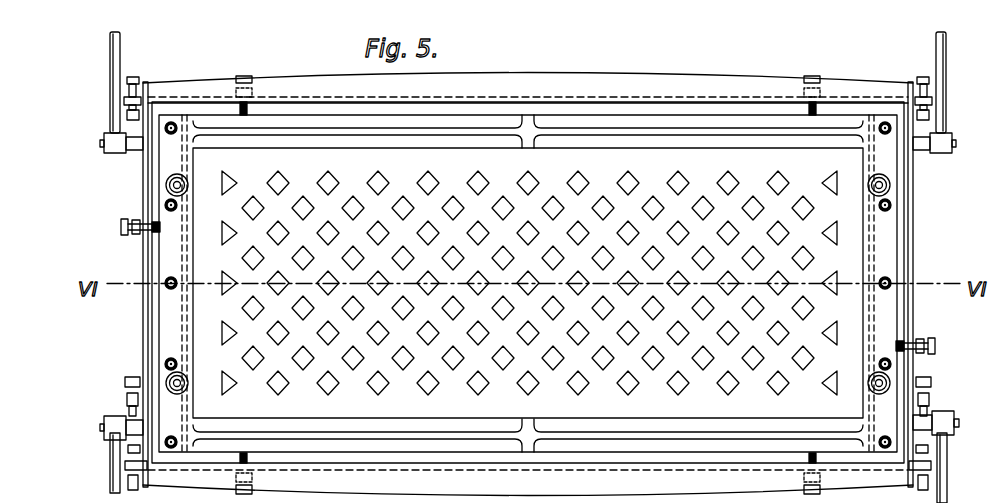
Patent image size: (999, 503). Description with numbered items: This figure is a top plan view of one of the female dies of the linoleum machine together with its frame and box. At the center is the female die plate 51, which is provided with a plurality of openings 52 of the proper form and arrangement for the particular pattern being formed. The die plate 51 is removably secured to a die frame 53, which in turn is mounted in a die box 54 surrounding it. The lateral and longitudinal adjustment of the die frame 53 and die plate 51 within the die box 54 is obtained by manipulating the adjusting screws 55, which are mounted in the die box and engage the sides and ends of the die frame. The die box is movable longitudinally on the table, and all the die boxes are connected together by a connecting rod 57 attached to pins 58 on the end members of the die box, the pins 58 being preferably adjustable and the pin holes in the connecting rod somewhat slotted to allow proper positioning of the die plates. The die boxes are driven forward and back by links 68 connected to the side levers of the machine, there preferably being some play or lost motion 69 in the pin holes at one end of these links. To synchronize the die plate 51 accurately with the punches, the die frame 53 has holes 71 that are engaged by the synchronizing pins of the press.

The female die plate 51 is at (528, 282).
The openings 52 is at (403, 196).
The die frame 53 is at (168, 297).
The die box 54 is at (147, 313).
The adjusting screws 55 is at (249, 71).
The connecting rod 57 is at (110, 69).
The pins 58 is at (960, 425).
The links 68 is at (115, 461).
The play or lost motion 69 is at (938, 415).
The holes 71 is at (168, 189).